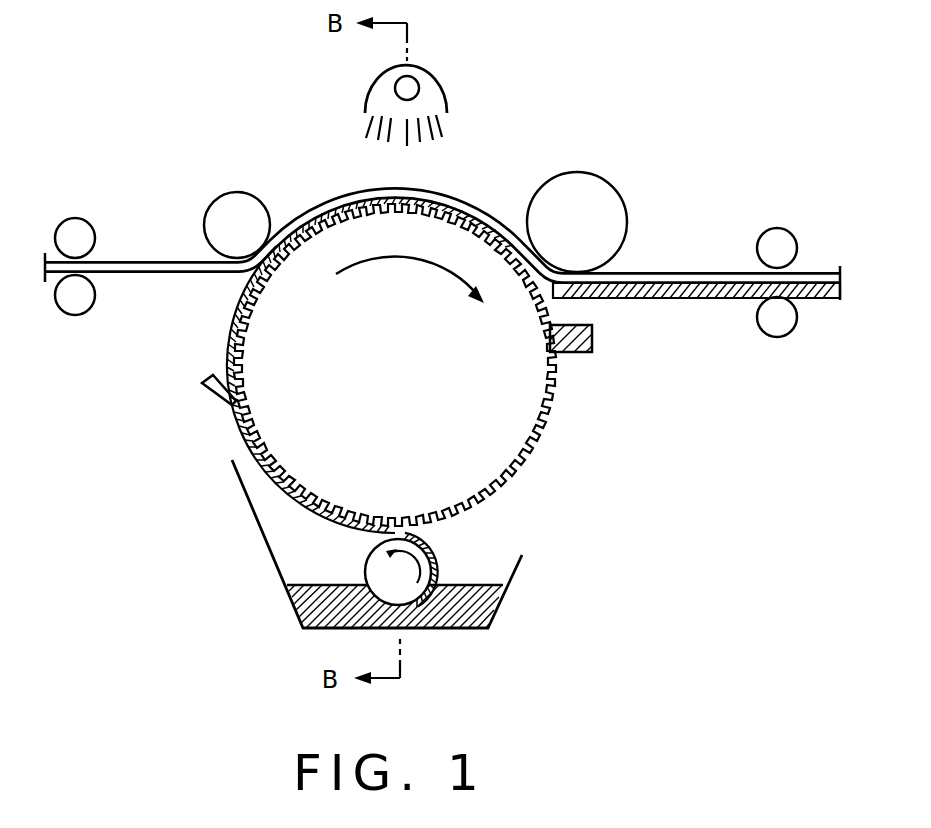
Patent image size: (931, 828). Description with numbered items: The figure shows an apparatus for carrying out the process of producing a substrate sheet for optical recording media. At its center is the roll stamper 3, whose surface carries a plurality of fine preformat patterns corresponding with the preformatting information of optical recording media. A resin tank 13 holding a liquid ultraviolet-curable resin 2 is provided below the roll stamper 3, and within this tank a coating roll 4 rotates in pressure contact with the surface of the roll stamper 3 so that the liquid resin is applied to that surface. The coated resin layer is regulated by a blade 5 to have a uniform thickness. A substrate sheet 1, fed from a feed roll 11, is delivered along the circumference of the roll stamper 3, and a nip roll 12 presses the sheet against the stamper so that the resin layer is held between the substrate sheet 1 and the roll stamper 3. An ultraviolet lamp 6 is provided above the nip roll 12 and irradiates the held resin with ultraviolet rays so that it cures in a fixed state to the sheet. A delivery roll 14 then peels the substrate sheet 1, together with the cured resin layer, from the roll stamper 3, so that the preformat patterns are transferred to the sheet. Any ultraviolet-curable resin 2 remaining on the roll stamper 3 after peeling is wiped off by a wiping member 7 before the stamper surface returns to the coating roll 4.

The substrate sheet 1 is at (141, 280).
The ultraviolet-curable resin 2 is at (500, 605).
The roll stamper 3 is at (540, 413).
The coating roll 4 is at (437, 555).
The blade 5 is at (210, 397).
The ultraviolet lamp 6 is at (443, 97).
The wiping member 7 is at (592, 338).
The feed roll 11 is at (75, 218).
The nip roll 12 is at (235, 192).
The resin tank 13 is at (260, 537).
The delivery roll 14 is at (610, 188).